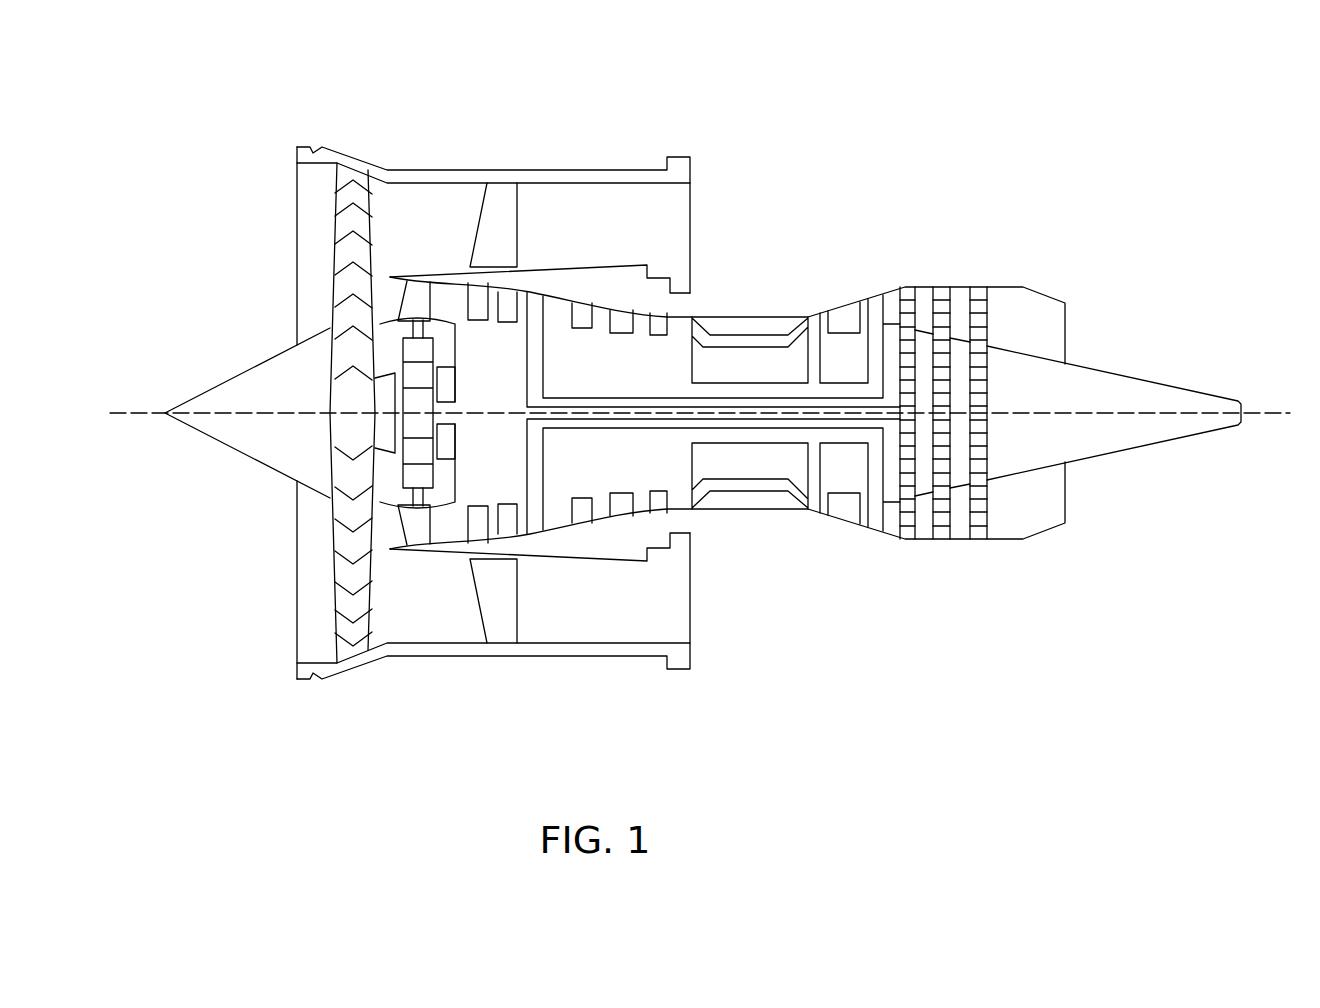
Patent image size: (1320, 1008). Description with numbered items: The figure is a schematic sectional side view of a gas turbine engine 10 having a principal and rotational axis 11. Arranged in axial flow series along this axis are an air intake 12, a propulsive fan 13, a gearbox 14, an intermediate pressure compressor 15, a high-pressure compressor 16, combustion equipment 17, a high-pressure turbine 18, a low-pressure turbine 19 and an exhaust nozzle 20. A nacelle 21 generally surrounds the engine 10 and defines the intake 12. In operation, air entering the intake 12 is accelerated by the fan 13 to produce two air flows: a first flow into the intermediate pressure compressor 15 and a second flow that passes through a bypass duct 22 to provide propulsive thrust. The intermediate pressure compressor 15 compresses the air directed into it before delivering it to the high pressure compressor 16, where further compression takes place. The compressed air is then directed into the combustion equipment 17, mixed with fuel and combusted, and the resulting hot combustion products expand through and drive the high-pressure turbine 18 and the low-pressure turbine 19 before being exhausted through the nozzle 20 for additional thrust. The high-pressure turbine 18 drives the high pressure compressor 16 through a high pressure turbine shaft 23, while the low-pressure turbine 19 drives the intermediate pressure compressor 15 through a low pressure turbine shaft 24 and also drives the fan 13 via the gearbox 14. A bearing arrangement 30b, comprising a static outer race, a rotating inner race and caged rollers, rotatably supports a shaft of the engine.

The gas turbine engine 10 is at (1078, 153).
The principal and rotational axis 11 is at (118, 408).
The air intake 12 is at (268, 211).
The propulsive fan 13 is at (347, 587).
The gearbox 14 is at (430, 527).
The intermediate pressure compressor 15 is at (487, 287).
The high-pressure compressor 16 is at (667, 360).
The combustion equipment 17 is at (742, 498).
The high-pressure turbine 18 is at (876, 320).
The low-pressure turbine 19 is at (944, 290).
The exhaust nozzle 20 is at (1047, 338).
The nacelle 21 is at (562, 169).
The bypass duct 22 is at (661, 205).
The high pressure turbine shaft 23 is at (840, 433).
The low pressure turbine shaft 24 is at (892, 424).
The bearing arrangement 30b is at (437, 397).